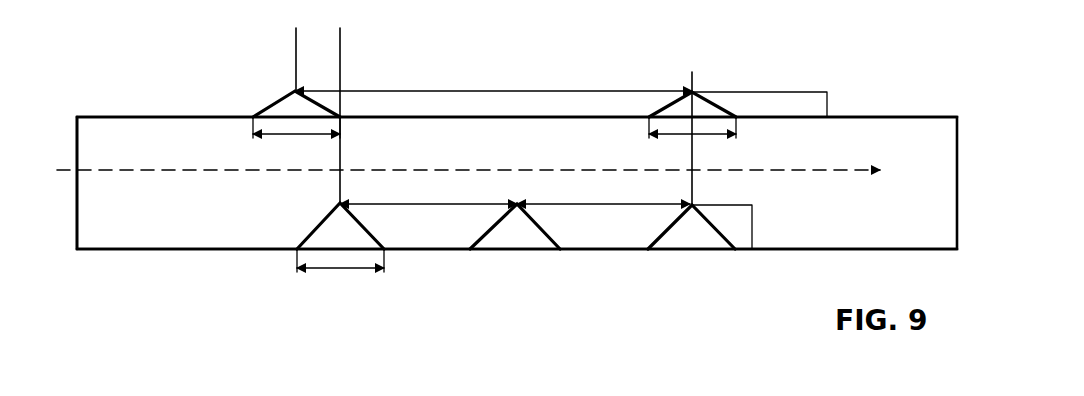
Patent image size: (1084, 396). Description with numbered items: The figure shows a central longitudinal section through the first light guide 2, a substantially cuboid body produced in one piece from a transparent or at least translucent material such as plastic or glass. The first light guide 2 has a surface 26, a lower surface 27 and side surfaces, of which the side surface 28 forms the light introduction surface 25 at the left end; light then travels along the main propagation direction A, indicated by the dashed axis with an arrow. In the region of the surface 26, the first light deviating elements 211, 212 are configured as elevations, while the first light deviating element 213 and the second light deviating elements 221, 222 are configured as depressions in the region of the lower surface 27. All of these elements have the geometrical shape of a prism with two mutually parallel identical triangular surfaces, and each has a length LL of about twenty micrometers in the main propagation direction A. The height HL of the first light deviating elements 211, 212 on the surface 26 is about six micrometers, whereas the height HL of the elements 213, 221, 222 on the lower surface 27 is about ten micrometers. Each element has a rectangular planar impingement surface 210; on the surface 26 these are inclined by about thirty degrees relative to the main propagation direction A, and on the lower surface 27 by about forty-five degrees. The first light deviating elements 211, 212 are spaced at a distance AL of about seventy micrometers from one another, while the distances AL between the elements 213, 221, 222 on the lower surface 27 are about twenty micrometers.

The first light guide 2 is at (122, 133).
The side surface 28 is at (70, 170).
The light introduction surface 25 is at (77, 223).
The surface 26 is at (918, 117).
The lower surface 27 is at (897, 252).
The planar impingement surface 210 is at (480, 235).
The first light deviating element 211 is at (297, 106).
The first light deviating element 212 is at (700, 105).
The second light deviating element 221 is at (333, 233).
The first light deviating element 213 is at (517, 235).
The second light deviating element 222 is at (690, 232).